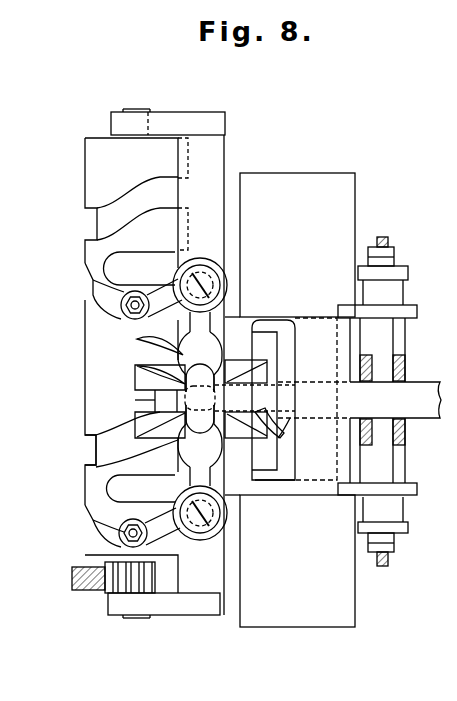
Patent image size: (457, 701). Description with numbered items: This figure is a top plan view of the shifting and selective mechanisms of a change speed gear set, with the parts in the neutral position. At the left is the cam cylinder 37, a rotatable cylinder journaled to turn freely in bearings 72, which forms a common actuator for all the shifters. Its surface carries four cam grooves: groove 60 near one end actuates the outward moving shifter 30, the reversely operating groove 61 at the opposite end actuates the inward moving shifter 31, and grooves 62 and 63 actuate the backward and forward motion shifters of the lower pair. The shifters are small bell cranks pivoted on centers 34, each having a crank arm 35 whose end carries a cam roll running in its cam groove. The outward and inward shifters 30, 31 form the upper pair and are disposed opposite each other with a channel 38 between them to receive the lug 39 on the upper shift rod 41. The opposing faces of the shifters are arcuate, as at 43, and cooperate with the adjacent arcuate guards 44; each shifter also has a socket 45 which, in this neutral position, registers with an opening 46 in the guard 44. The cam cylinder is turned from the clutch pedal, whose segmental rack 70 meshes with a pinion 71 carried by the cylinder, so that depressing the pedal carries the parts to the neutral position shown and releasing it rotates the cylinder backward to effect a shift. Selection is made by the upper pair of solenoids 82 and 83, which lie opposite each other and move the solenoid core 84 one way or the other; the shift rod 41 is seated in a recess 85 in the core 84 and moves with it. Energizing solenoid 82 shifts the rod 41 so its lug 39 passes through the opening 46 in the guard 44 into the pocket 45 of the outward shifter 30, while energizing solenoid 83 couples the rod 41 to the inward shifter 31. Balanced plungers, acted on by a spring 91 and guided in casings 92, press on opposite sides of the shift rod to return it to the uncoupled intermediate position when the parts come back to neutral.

The outward movement gear shifter 30 is at (168, 344).
The inward movement gear shifter 31 is at (218, 480).
The pivot center 34 is at (200, 272).
The crank arm 35 is at (156, 290).
The cam cylinder 37 is at (86, 406).
The channel 38 is at (168, 400).
The lug 39 is at (222, 398).
The shift rod 41 is at (418, 390).
The arcuate face 43 is at (255, 438).
The arcuate guard 44 is at (136, 372).
The socket 45 is at (233, 353).
The opening 46 is at (150, 368).
The cam groove 60 is at (95, 283).
The cam groove 61 is at (91, 511).
The cam groove 62 is at (93, 450).
The cam groove 63 is at (95, 222).
The segmental rack 70 is at (72, 577).
The pinion 71 is at (112, 595).
The bearing 72 is at (166, 122).
The solenoid 82 is at (290, 245).
The solenoid 83 is at (290, 561).
The solenoid core 84 is at (285, 371).
The recess 85 is at (284, 426).
The spring 91 is at (406, 424).
The casing 92 is at (395, 458).